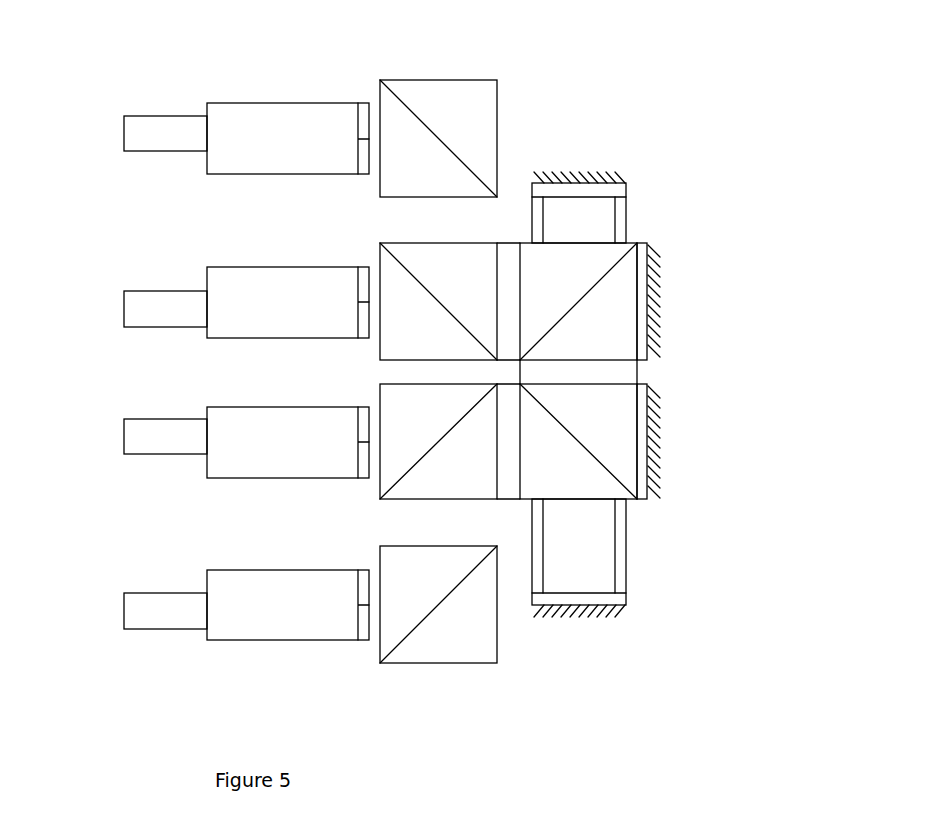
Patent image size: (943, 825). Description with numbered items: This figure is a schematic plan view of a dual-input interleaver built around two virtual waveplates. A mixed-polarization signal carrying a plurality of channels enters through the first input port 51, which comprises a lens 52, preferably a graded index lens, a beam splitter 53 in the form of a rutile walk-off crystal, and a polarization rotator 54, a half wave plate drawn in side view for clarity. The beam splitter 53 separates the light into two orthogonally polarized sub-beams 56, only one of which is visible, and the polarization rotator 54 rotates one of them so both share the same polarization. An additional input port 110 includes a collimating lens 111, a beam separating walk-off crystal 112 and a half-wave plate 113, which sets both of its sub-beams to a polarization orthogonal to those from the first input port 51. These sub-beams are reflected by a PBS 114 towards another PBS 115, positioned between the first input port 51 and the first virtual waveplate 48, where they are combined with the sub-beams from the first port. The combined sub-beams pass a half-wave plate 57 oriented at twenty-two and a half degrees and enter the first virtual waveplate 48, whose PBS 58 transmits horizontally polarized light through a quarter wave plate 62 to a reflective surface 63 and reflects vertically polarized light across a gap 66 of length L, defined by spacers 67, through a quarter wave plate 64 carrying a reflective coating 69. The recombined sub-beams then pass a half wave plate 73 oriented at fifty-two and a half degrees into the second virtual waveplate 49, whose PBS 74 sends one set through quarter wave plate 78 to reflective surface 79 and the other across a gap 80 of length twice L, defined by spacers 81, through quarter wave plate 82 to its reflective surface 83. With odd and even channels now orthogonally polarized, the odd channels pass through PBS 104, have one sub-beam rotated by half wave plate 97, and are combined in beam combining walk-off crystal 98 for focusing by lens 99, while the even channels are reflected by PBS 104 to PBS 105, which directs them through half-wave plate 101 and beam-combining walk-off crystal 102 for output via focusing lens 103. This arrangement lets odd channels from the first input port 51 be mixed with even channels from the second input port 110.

The first virtual waveplate 48 is at (708, 241).
The second virtual waveplate 49 is at (710, 402).
The input port 51 is at (143, 364).
The lens 52 is at (155, 303).
The beam splitter 53 is at (258, 285).
The polarization rotator 54 is at (365, 338).
The sub-beams 56 is at (505, 487).
The half-wave plate 57 is at (505, 250).
The PBS 58 is at (627, 284).
The quarter wave plate 62 is at (647, 338).
The reflective surface 63 is at (675, 298).
The quarter wave plate 64 is at (627, 195).
The gap 66 is at (595, 229).
The spacers 67 is at (626, 213).
The reflective coating 69 is at (579, 166).
The half wave plate 73 is at (627, 372).
The PBS 74 is at (627, 457).
The quarter wave plate 78 is at (647, 492).
The reflective surface 79 is at (675, 422).
The gap 80 is at (595, 559).
The spacers 81 is at (627, 530).
The quarter wave plate 82 is at (627, 598).
The reflective surface 83 is at (609, 623).
The half wave plate 97 is at (367, 423).
The beam combining walk-off crystal 98 is at (242, 458).
The lens 99 is at (172, 443).
The half-wave plate 101 is at (367, 632).
The beam-combining walk-off crystal 102 is at (278, 617).
The focusing lens 103 is at (155, 618).
The PBS 104 is at (468, 650).
The PBS 105 is at (418, 492).
The additional input port 110 is at (93, 188).
The collimating lens 111 is at (138, 128).
The beam separating walk-off crystal 112 is at (225, 108).
The half-wave plate 113 is at (365, 110).
The PBS 114 is at (435, 92).
The PBS 115 is at (415, 247).